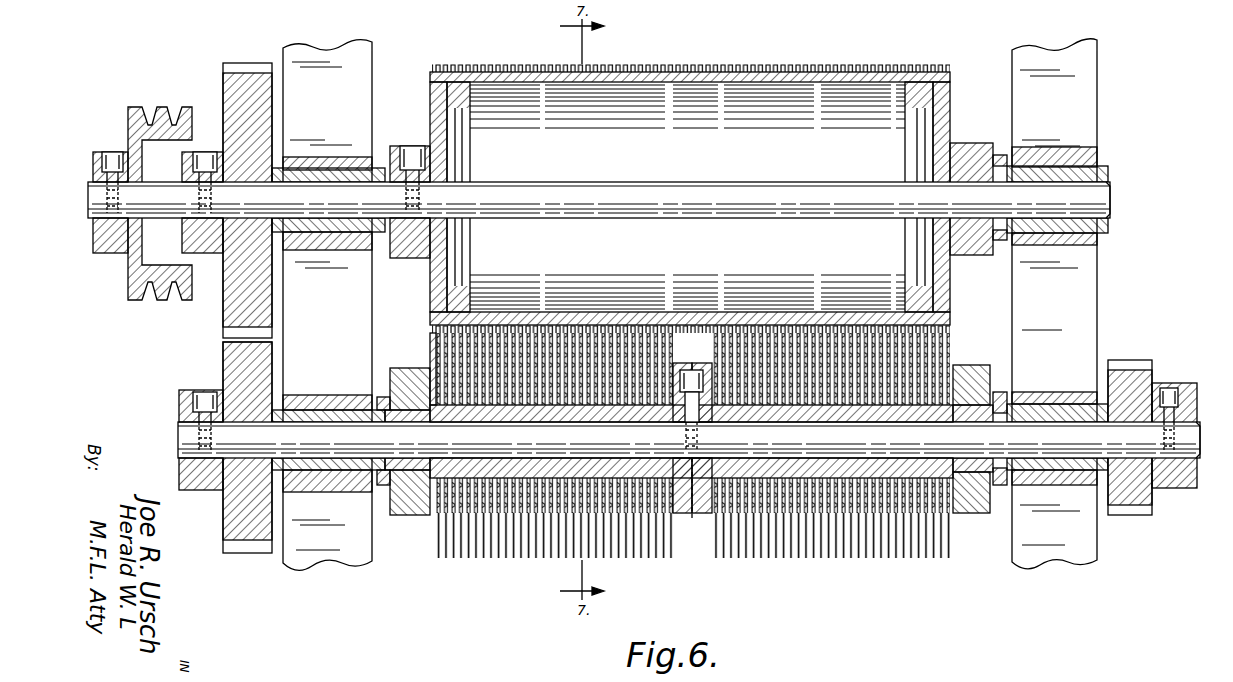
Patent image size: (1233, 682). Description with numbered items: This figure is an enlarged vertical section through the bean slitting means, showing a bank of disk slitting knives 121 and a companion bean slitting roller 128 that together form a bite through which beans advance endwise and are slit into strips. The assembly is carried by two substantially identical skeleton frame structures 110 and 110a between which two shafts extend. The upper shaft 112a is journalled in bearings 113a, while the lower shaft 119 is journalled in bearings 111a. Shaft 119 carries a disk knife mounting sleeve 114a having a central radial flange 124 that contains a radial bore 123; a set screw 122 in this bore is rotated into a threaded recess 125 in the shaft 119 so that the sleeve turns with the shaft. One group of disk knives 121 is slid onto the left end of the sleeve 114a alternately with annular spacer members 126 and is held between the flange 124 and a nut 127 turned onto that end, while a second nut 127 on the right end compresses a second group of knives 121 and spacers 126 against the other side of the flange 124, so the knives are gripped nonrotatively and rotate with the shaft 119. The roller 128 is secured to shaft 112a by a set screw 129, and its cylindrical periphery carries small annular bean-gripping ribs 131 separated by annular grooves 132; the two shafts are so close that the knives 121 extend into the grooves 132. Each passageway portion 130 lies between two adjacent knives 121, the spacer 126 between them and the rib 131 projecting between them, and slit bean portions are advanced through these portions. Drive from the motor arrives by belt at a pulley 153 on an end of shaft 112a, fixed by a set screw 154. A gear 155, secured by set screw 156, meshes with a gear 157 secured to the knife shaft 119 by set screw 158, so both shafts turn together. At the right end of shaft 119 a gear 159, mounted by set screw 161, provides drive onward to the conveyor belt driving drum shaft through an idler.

The skeleton frame structure 110 is at (330, 566).
The skeleton frame structure 110a is at (1068, 572).
The bearings 111a is at (330, 405).
The shaft 112a is at (562, 183).
The bearings 113a is at (321, 168).
The disk knife mounting sleeve 114a is at (842, 408).
The shaft 119 is at (691, 405).
The disk knives 121 is at (632, 330).
The set screw 122 is at (678, 410).
The radial bore 123 is at (695, 330).
The central radial flange 124 is at (704, 410).
The threaded recess 125 is at (695, 501).
The annular spacer members 126 is at (452, 546).
The nut 127 is at (408, 516).
The bean slitting roller 128 is at (762, 67).
The set screw 129 is at (407, 146).
The passageway portion 130 is at (440, 350).
The bean-gripping ribs 131 is at (544, 66).
The annular grooves 132 is at (490, 66).
The pulley 153 is at (128, 126).
The set screw 154 is at (108, 155).
The gear 155 is at (240, 63).
The set screw 156 is at (205, 152).
The gear 157 is at (248, 541).
The set screw 158 is at (200, 400).
The gear 159 is at (1130, 360).
The set screw 161 is at (1172, 389).